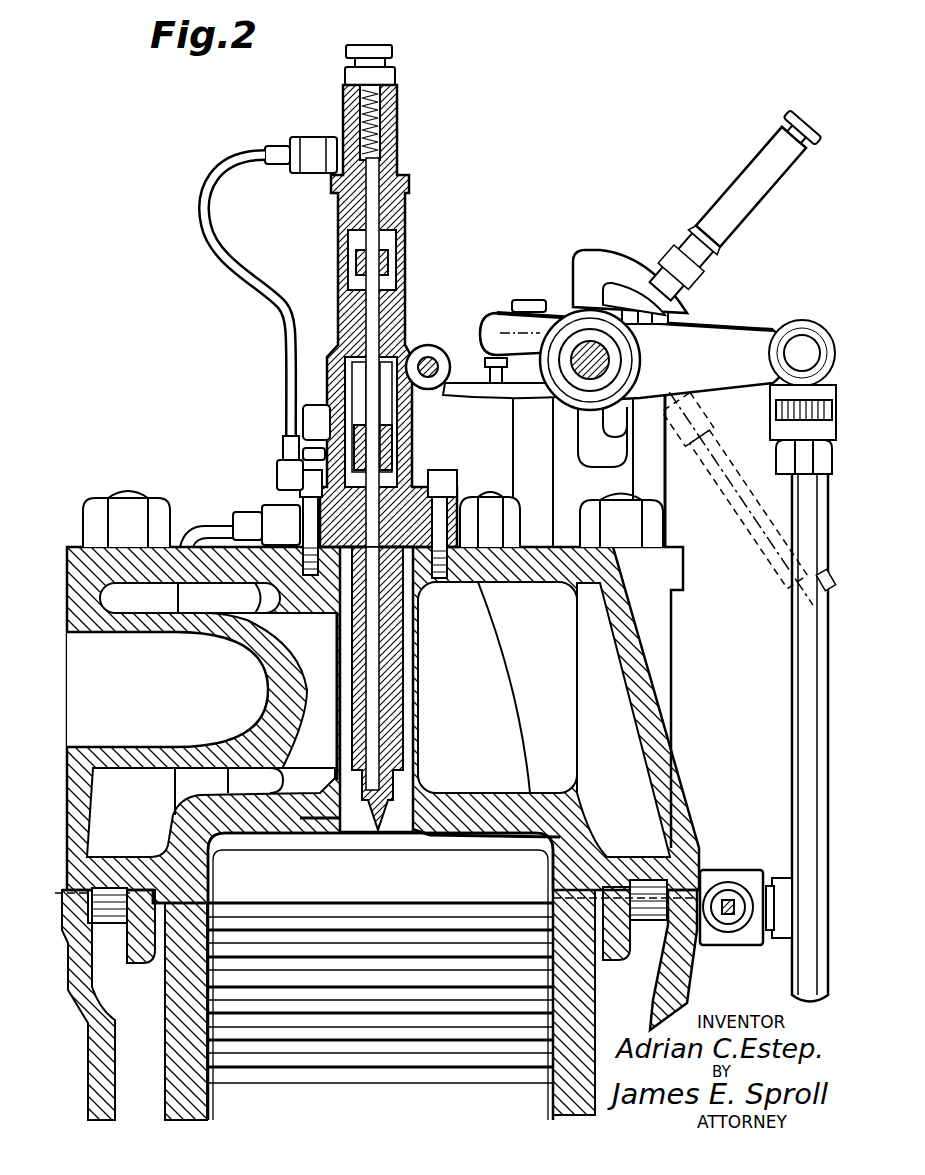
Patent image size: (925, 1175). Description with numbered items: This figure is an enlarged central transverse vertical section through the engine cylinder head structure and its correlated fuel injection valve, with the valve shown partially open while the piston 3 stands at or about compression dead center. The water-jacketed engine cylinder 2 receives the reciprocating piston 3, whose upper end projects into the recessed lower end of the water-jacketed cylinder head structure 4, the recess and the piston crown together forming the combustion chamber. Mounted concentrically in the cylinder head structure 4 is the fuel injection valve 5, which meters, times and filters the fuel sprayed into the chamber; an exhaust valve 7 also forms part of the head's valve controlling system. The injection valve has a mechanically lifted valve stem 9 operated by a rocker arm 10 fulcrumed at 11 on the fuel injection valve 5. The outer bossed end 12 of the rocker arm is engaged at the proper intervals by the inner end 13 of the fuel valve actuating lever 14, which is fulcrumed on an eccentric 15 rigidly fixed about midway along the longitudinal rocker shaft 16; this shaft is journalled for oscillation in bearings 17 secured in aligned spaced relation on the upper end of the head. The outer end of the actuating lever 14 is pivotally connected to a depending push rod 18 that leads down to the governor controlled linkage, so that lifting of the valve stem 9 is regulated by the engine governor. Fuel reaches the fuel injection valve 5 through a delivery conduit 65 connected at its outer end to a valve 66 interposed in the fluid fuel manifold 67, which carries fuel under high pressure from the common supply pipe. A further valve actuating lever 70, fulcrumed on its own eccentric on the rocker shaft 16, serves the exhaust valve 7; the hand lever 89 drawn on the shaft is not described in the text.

The engine cylinder 2 is at (685, 998).
The piston 3 is at (392, 1060).
The cylinder head structure 4 is at (625, 745).
The fuel injection valve 5 is at (335, 250).
The exhaust valve 7 is at (305, 420).
The valve stem 9 is at (375, 668).
The rocker arm 10 is at (470, 398).
The fulcrum 11 is at (430, 355).
The outer bossed end 12 is at (496, 398).
The inner end 13 is at (489, 330).
The fuel valve actuating lever 14 is at (715, 345).
The eccentric 15 is at (550, 393).
The rocker shaft 16 is at (585, 350).
The bearings 17 is at (640, 476).
The push rod 18 is at (808, 638).
The delivery conduit 65 is at (200, 525).
The valve 66 is at (742, 872).
The fluid fuel manifold 67 is at (724, 882).
The valve actuating lever 70 is at (770, 393).
The hand lever 89 is at (735, 202).